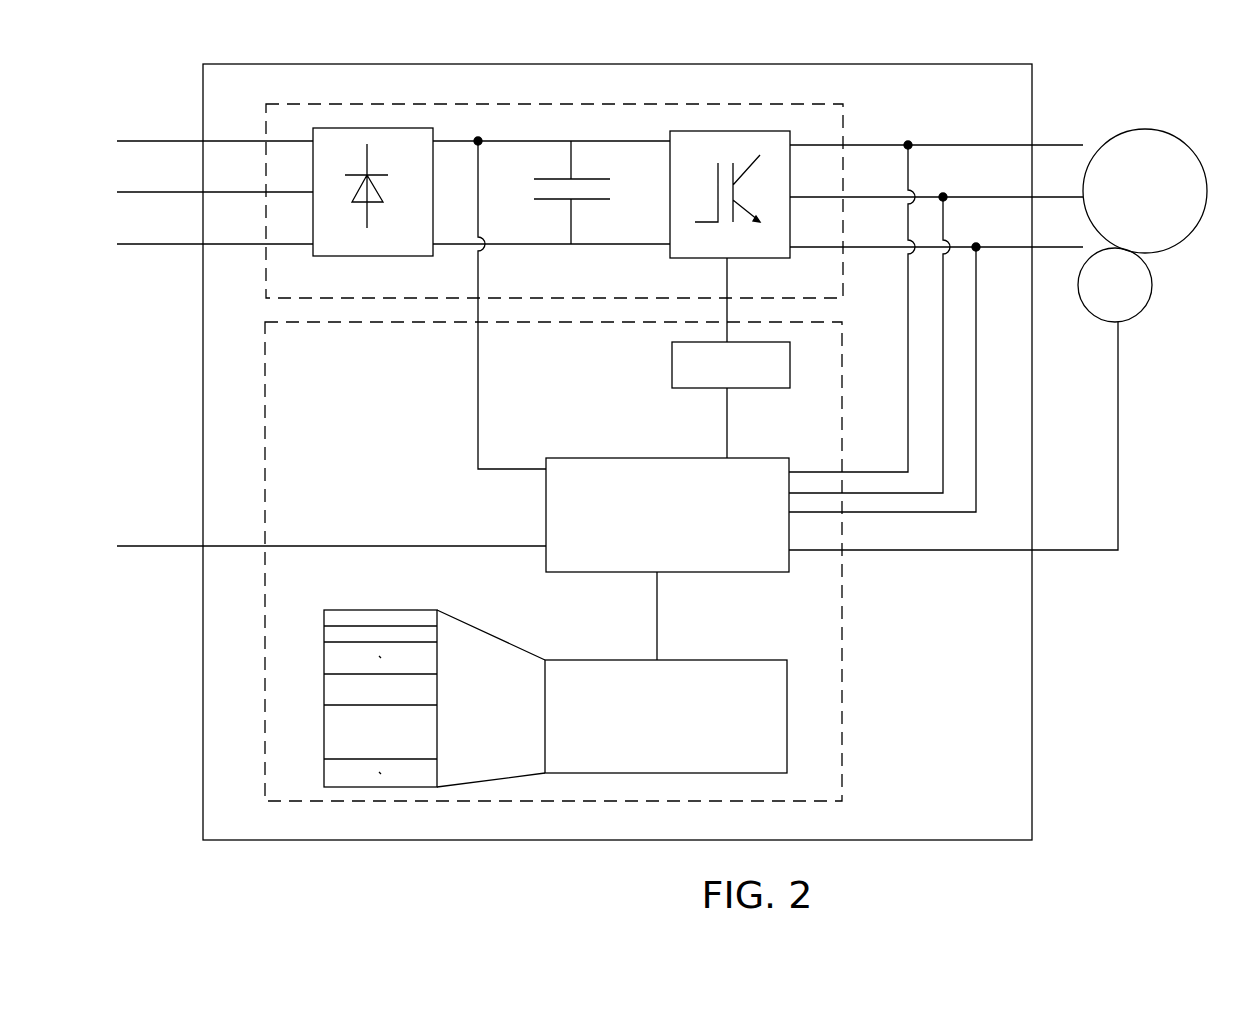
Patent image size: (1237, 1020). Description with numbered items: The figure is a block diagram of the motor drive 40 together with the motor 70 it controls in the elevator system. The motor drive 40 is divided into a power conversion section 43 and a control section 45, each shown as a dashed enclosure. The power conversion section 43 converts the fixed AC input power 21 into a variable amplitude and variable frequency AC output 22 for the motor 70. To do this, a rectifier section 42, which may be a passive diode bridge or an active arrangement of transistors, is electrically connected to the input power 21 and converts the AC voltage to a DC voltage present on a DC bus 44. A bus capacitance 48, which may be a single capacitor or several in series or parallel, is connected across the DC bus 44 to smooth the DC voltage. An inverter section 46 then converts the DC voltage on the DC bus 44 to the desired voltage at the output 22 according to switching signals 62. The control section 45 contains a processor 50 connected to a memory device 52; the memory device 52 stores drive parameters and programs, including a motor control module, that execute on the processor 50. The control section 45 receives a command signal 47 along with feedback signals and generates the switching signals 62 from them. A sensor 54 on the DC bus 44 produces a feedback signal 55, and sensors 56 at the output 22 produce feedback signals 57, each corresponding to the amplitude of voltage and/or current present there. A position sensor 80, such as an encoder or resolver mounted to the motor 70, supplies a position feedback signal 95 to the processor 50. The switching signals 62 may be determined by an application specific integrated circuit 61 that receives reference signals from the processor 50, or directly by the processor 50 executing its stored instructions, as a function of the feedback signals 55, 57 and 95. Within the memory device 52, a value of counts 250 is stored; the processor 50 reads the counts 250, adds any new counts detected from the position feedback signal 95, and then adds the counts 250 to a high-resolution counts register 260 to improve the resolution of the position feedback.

The input power 21 is at (188, 132).
The output 22 is at (1040, 138).
The motor drive 40 is at (840, 66).
The rectifier section 42 is at (390, 257).
The power conversion section 43 is at (330, 104).
The DC bus 44 is at (652, 140).
The control section 45 is at (265, 410).
The inverter section 46 is at (670, 226).
The command signal 47 is at (150, 545).
The bus capacitance 48 is at (557, 205).
The processor 50 is at (622, 458).
The memory device 52 is at (715, 660).
The sensor 54 is at (478, 138).
The feedback signal 55 is at (478, 424).
The sensors 56 is at (978, 245).
The feedback signals 57 is at (910, 462).
The application specific integrated circuit 61 is at (672, 375).
The switching signals 62 is at (727, 328).
The motor 70 is at (1182, 158).
The position sensor 80 is at (1090, 302).
The position feedback signal 95 is at (1120, 470).
The counts 250 is at (324, 690).
The high-resolution counts register 260 is at (324, 735).